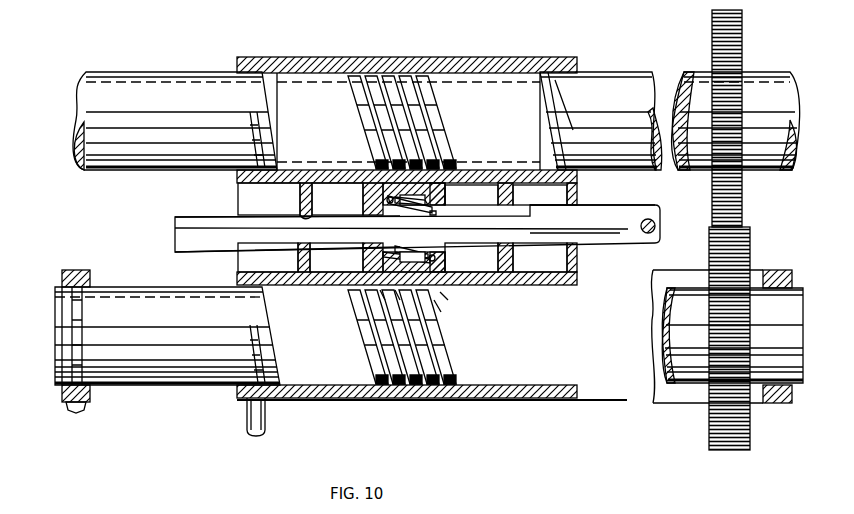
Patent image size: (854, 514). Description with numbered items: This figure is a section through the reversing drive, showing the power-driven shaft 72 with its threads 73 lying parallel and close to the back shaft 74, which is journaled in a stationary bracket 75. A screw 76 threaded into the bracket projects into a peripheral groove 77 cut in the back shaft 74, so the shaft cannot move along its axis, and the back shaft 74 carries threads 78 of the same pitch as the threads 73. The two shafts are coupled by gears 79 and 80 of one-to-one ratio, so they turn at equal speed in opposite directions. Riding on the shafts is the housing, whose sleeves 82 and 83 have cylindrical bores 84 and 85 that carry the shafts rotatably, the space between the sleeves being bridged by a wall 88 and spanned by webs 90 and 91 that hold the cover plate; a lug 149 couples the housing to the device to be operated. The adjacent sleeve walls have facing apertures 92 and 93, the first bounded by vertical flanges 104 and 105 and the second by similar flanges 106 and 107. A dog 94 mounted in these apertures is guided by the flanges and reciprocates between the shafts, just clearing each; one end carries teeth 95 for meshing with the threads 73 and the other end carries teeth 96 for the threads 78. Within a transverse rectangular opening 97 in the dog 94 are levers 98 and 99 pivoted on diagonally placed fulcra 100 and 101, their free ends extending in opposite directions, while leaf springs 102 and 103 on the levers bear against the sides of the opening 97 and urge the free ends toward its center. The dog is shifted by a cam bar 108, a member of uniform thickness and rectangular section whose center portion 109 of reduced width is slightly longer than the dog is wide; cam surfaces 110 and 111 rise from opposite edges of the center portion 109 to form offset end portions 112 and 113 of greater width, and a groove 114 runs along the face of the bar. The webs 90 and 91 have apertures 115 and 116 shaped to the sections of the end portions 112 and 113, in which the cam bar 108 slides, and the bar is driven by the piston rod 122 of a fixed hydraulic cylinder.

The power-driven shaft 72 is at (155, 103).
The threads 73 is at (418, 86).
The back shaft 74 is at (178, 317).
The bracket 75 is at (662, 408).
The screw 76 is at (72, 410).
The peripheral groove 77 is at (82, 325).
The threads 78 is at (451, 358).
The gear 79 is at (743, 48).
The gear 80 is at (751, 253).
The sleeve 82 is at (536, 57).
The sleeve 83 is at (488, 401).
The cylindrical bore 84 is at (313, 74).
The cylindrical bore 85 is at (514, 386).
The wall 88 is at (250, 197).
The web 90 is at (318, 183).
The web 91 is at (518, 261).
The aperture 92 is at (445, 179).
The aperture 93 is at (425, 296).
The dog 94 is at (400, 297).
The teeth 95 is at (382, 184).
The teeth 96 is at (441, 310).
The transverse rectangular opening 97 is at (358, 244).
The lever 98 is at (396, 212).
The lever 99 is at (437, 252).
The fulcrum 100 is at (385, 198).
The fulcrum 101 is at (445, 295).
The leaf spring 102 is at (445, 206).
The leaf spring 103 is at (388, 250).
The vertical flange 104 is at (386, 196).
The vertical flange 105 is at (448, 194).
The flange 106 is at (368, 281).
The flange 107 is at (455, 263).
The cam bar 108 is at (158, 233).
The center portion 109 is at (465, 226).
The cam surface 110 is at (436, 213).
The cam surface 111 is at (363, 259).
The end portion 112 is at (190, 240).
The end portion 113 is at (616, 213).
The groove 114 is at (190, 217).
The aperture 115 is at (300, 218).
The aperture 116 is at (512, 237).
The piston rod 122 is at (655, 226).
The lug 149 is at (247, 432).